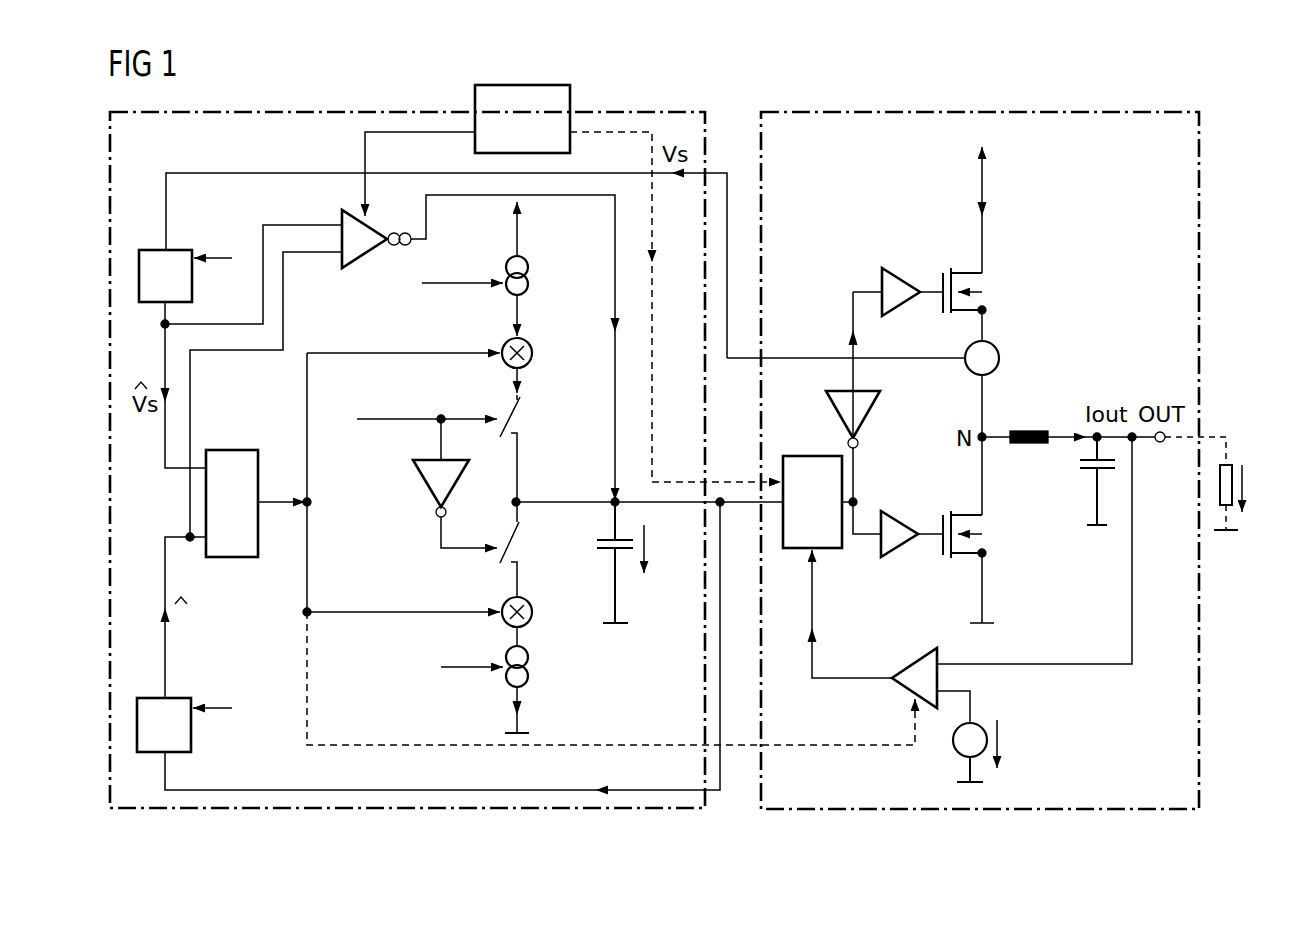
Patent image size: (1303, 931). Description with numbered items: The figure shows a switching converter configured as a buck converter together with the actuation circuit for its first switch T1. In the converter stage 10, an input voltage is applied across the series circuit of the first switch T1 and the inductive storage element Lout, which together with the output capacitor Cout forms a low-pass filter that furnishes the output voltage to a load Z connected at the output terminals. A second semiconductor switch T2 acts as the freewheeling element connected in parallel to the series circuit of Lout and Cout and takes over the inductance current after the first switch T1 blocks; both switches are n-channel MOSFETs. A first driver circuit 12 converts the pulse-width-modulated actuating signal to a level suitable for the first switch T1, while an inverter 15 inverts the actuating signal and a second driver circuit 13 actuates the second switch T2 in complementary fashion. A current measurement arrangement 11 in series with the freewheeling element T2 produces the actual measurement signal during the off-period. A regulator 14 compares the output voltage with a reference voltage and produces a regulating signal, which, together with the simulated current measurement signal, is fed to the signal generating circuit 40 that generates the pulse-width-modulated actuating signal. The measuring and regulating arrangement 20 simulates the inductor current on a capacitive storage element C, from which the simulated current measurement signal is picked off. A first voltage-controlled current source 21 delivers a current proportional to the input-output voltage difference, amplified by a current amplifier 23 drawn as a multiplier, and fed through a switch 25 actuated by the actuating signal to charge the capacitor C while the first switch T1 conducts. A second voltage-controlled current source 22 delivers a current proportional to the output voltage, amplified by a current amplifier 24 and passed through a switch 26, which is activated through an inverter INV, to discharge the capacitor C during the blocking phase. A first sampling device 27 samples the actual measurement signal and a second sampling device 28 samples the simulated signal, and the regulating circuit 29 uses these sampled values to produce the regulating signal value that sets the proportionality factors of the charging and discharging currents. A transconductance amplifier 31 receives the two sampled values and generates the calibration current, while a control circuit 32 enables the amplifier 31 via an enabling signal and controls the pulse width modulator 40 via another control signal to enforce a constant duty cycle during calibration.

The voltage regulator / power stage 10 is at (1199, 224).
The measuring and regulating arrangement 20 is at (331, 112).
The current measurement arrangement 11 is at (1000, 352).
The first driver circuit 12 is at (882, 285).
The driver buffer for T2 13 is at (893, 511).
The regulator 14 is at (910, 660).
The inverter 15 is at (870, 420).
The first voltage-controlled current source 21 is at (529, 270).
The second voltage-controlled current source 22 is at (528, 663).
The current amplifier 23 is at (532, 355).
The current amplifier 24 is at (532, 614).
The switch 25 is at (513, 427).
The switch 26 is at (512, 552).
The first sampling device 27 is at (178, 250).
The second sampling device 28 is at (172, 698).
The regulating circuit 29 is at (232, 557).
The transconductance amplifier 31 is at (342, 222).
The control circuit 32 is at (570, 103).
The signal generating circuit 40 is at (812, 456).
The first switch T1 is at (977, 280).
The second semiconductor switch T2 is at (975, 527).
The capacitive storage element C is at (596, 548).
The inverter INV is at (426, 488).
The inductive storage element Lout is at (1030, 431).
The output capacitor Cout is at (1079, 461).
The load impedance Z is at (1228, 465).